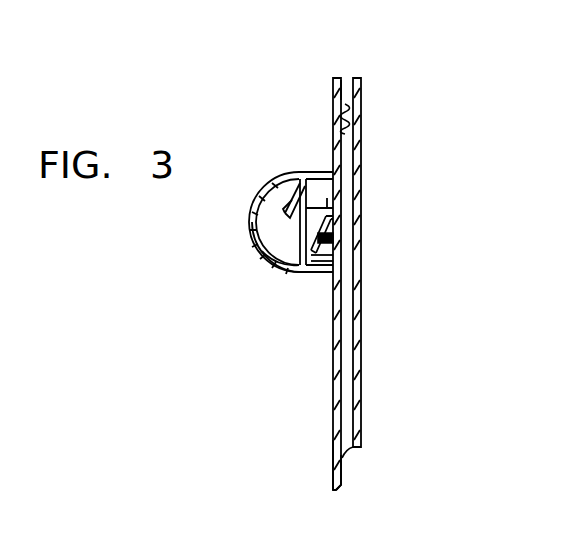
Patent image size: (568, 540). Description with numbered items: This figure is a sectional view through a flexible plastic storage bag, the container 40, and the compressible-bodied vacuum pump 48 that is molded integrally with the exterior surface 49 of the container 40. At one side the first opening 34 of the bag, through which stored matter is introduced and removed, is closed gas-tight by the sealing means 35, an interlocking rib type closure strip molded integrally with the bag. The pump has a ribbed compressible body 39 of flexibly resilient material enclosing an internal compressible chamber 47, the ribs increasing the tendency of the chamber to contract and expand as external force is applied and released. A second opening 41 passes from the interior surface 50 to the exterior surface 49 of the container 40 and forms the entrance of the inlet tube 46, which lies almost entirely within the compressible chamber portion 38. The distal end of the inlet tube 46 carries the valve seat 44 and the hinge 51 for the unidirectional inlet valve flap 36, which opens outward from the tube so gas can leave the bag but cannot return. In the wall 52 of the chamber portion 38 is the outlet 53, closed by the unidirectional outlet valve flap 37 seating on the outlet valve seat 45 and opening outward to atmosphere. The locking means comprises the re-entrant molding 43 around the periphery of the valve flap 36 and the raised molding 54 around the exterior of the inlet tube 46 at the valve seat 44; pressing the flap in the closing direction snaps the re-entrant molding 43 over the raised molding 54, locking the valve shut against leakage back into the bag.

The first opening 34 is at (345, 95).
The sealing means 35 is at (340, 122).
The unidirectional inlet valve flap 36 is at (330, 234).
The unidirectional outlet valve flap 37 is at (307, 206).
The compressible chamber portion 38 is at (313, 190).
The compressible body 39 is at (262, 255).
The container 40 is at (362, 423).
The second opening 41 is at (330, 240).
The re-entrant molding 43 is at (310, 263).
The valve seat 44 is at (332, 247).
The outlet valve seat 45 is at (300, 212).
The inlet tube 46 is at (330, 229).
The internal compressible chamber 47 is at (286, 206).
The compressible-bodied vacuum pump 48 is at (297, 183).
The exterior surface 49 is at (333, 450).
The interior surface 50 is at (348, 453).
The hinge 51 is at (330, 224).
The wall 52 is at (268, 263).
The outlet 53 is at (262, 240).
The raised molding 54 is at (336, 255).